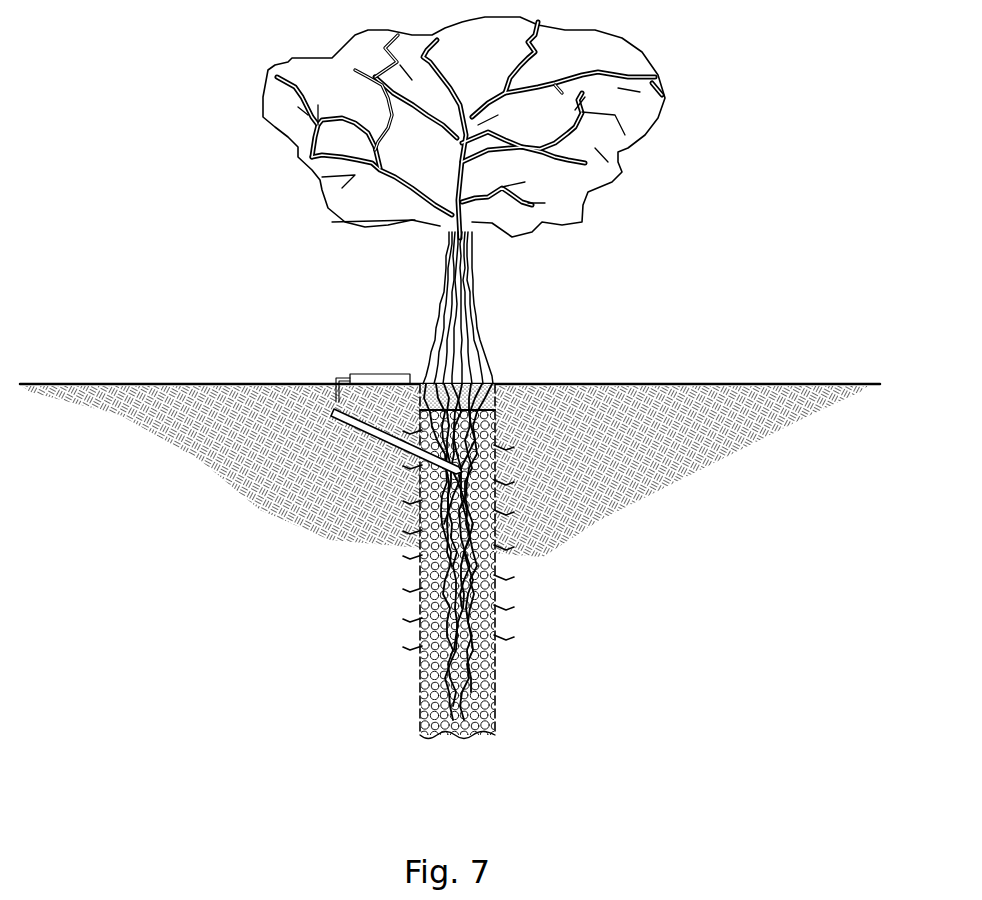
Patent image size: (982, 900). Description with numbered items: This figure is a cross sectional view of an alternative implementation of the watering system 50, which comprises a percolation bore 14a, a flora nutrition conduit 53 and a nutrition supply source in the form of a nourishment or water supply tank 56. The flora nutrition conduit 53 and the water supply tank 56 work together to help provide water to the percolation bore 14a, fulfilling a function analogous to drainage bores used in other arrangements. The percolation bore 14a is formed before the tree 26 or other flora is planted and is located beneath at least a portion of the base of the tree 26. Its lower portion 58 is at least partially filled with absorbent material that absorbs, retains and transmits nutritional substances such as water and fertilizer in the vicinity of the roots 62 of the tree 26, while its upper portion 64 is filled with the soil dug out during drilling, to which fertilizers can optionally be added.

The tree planting system 50 is at (196, 267).
The tree 26 is at (449, 283).
The water supply tank 56 is at (378, 375).
The flora nutrition conduit 53 is at (335, 414).
The upper portion 64 is at (495, 383).
The percolation bore 14a is at (572, 438).
The lower portion 58 is at (522, 425).
The roots 62 is at (398, 648).